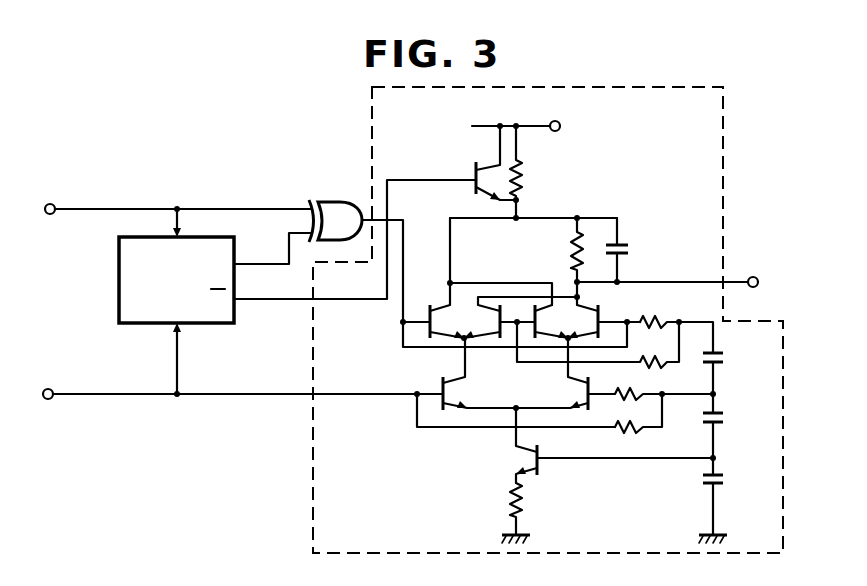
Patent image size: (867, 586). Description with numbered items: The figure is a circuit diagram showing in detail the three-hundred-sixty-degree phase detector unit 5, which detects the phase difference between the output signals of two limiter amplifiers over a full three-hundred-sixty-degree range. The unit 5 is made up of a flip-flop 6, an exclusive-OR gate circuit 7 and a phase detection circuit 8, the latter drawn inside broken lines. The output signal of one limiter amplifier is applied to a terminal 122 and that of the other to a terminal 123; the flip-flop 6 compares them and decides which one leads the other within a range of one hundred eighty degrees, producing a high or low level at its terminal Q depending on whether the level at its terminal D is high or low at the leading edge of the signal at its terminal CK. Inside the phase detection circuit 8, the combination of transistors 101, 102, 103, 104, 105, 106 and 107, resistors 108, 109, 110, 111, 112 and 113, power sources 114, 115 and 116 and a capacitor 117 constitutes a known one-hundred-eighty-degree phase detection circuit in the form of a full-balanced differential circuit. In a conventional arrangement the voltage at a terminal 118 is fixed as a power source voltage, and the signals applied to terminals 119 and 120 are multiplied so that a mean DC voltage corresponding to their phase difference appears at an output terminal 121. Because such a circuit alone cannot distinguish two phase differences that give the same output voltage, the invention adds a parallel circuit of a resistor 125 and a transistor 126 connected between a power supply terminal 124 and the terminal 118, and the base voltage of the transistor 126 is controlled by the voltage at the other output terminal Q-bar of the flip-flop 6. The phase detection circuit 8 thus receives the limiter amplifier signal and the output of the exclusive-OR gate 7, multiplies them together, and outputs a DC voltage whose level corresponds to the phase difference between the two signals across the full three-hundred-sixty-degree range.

The 360° phase detector unit 5 is at (225, 157).
The flip-flop 6 is at (119, 305).
The exclusive-OR gate circuit 7 is at (343, 200).
The phase detection circuit 8 is at (655, 88).
The transistor 101 is at (543, 472).
The transistor 102 is at (452, 393).
The transistor 103 is at (583, 397).
The transistor 104 is at (444, 308).
The transistor 105 is at (481, 315).
The transistor 106 is at (543, 325).
The transistor 107 is at (603, 312).
The resistor 108 is at (523, 503).
The resistor 109 is at (634, 434).
The resistor 110 is at (634, 399).
The resistor 111 is at (650, 365).
The resistor 112 is at (668, 318).
The resistor 113 is at (571, 258).
The power source 114 is at (726, 484).
The power source 115 is at (726, 417).
The power source 116 is at (726, 362).
The capacitor 117 is at (628, 250).
The terminal 118 is at (557, 218).
The terminal 119 is at (380, 398).
The terminal 120 is at (403, 341).
The output terminal 121 is at (753, 277).
The terminal 122 is at (48, 399).
The terminal 123 is at (50, 214).
The power supply terminal 124 is at (561, 126).
The resistor 125 is at (522, 178).
The transistor 126 is at (473, 160).